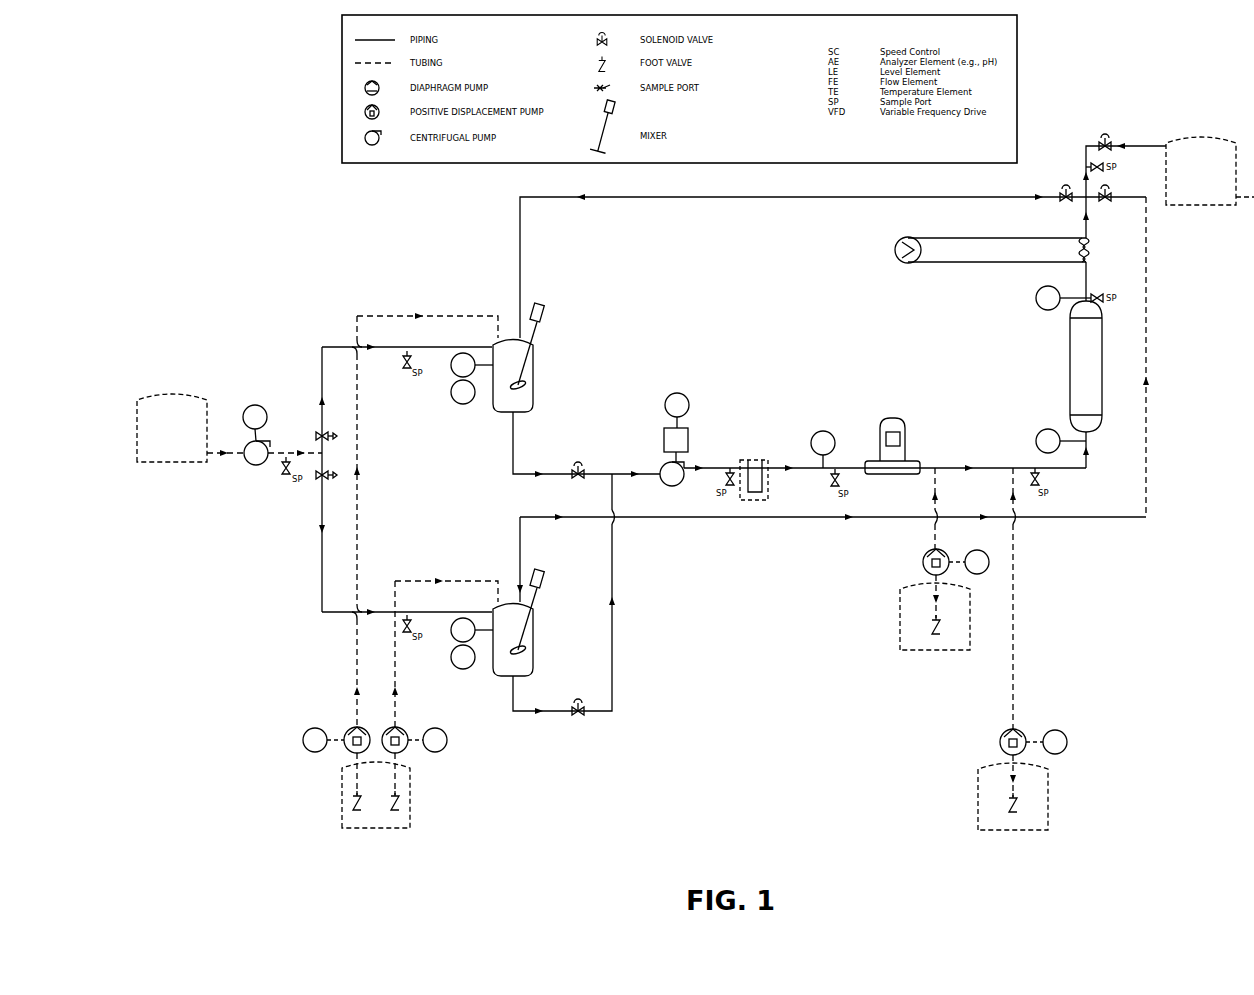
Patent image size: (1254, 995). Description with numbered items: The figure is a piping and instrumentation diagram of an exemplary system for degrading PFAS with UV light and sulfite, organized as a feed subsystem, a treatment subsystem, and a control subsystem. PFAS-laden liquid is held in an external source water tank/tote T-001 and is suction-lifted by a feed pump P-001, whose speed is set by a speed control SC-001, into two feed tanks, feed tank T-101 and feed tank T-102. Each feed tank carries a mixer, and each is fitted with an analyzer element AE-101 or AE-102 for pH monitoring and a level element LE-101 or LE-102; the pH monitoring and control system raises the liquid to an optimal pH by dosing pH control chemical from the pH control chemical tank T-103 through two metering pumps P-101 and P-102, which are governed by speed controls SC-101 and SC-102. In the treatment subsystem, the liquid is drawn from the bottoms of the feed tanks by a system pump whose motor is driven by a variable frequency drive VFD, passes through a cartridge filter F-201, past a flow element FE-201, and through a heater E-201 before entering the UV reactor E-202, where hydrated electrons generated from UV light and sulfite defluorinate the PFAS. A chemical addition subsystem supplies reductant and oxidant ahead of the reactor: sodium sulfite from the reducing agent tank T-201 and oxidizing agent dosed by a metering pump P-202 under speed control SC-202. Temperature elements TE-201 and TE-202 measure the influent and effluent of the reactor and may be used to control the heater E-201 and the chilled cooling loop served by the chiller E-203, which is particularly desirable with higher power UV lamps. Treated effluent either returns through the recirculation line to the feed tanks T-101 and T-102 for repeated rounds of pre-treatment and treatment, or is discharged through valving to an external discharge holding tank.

The source water tank/tote T-001 is at (158, 445).
The feed pump P-001 is at (255, 467).
The speed control SC-001 is at (255, 423).
The feed tank #1 T-101 is at (544, 357).
The feed tank #2 T-102 is at (544, 622).
The analyzer element AE-101 is at (472, 365).
The level element LE-101 is at (463, 392).
The analyzer element AE-102 is at (472, 630).
The level element LE-102 is at (463, 657).
The metering pump P-101 is at (416, 756).
The metering pump P-102 is at (395, 740).
The speed control SC-101 is at (323, 740).
The speed control SC-102 is at (427, 740).
The pH control chemical tank T-103 is at (386, 803).
The variable frequency drive VFD is at (676, 445).
The cartridge filter F-201 is at (788, 480).
The flow element FE-201 is at (823, 449).
The heater E-201 is at (906, 446).
The UV reactor E-202 is at (1060, 366).
The temperature element TE-201 is at (1061, 441).
The temperature element TE-202 is at (1061, 298).
The chiller E-203 is at (989, 268).
The reducing agent tank T-201 is at (935, 624).
The metering pump P-202 is at (981, 741).
The speed control SC-202 is at (1046, 742).